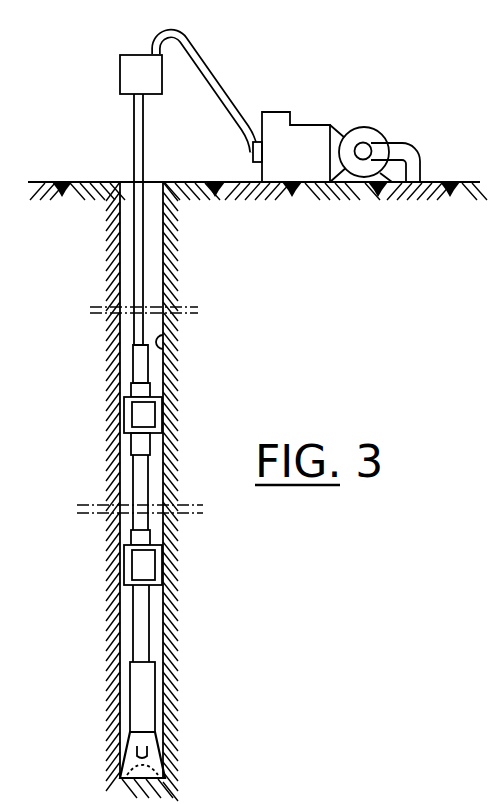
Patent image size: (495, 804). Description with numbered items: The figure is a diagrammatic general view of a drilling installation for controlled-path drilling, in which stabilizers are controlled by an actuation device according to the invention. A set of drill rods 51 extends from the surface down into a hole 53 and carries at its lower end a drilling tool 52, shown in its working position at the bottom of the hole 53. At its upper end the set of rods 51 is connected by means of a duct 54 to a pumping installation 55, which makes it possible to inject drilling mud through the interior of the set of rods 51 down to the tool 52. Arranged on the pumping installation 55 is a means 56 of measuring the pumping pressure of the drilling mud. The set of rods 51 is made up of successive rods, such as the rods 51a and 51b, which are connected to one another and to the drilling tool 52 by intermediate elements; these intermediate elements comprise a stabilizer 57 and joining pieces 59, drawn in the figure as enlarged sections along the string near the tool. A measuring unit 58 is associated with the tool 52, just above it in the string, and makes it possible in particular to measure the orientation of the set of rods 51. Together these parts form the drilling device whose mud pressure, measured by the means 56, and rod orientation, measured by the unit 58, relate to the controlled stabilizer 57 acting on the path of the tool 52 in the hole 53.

The set of drill rods 51 is at (134, 124).
The rod 51a is at (142, 363).
The rod 51b is at (142, 478).
The drilling tool 52 is at (163, 745).
The hole 53 is at (163, 345).
The duct 54 is at (220, 98).
The pumping installation 55 is at (323, 136).
The means of measuring the pumping pressure 56 is at (289, 123).
The stabilizer 57 is at (166, 578).
The measuring unit 58 is at (143, 703).
The joining pieces 59 is at (150, 445).